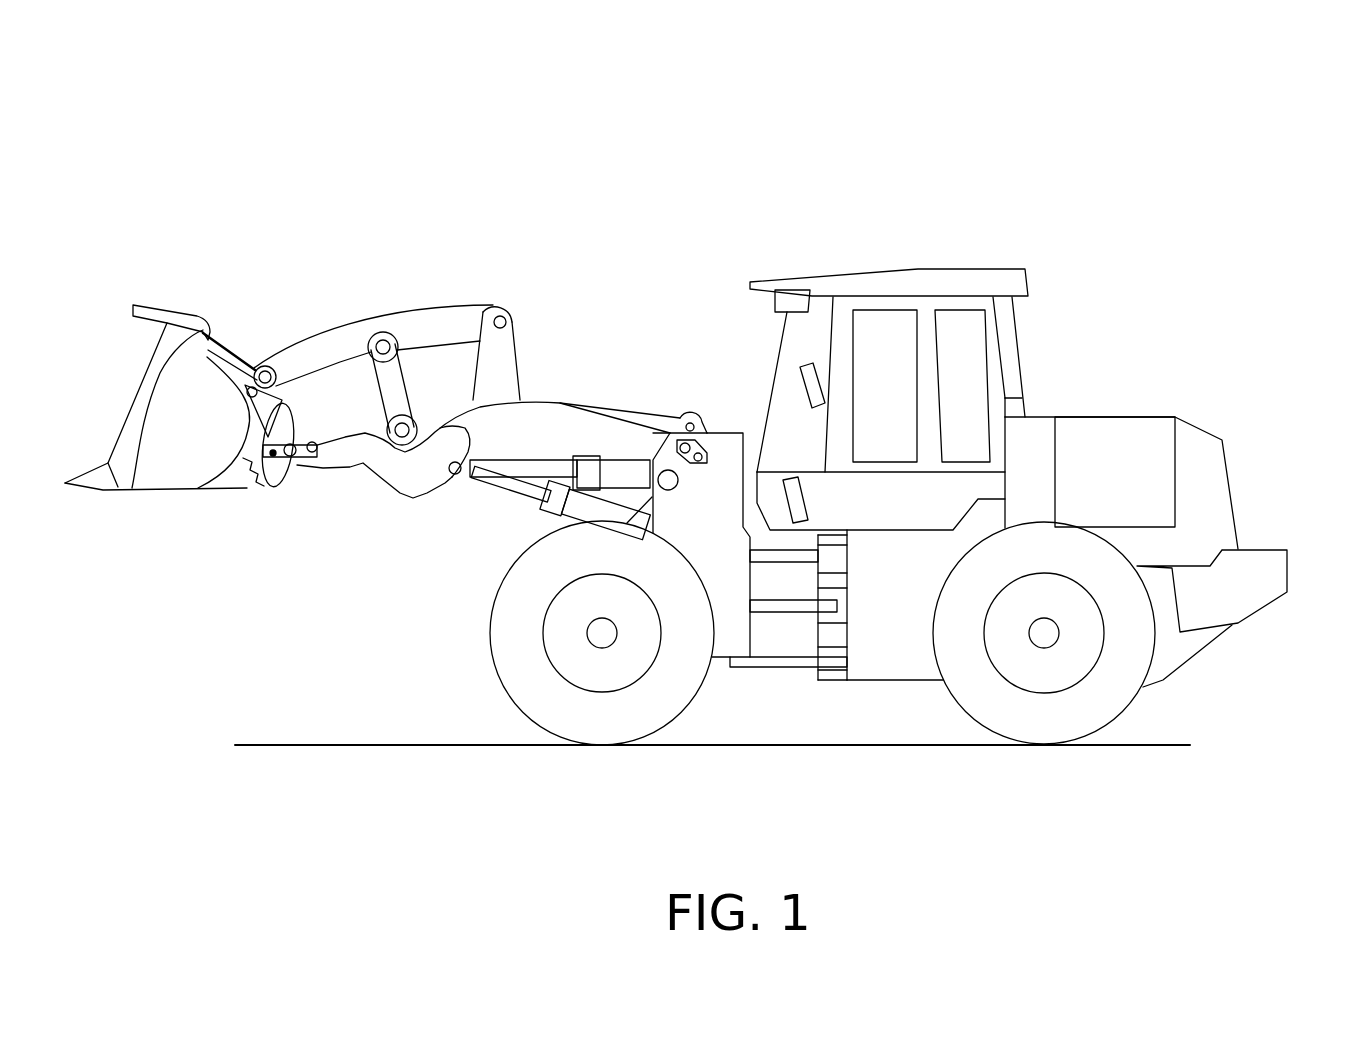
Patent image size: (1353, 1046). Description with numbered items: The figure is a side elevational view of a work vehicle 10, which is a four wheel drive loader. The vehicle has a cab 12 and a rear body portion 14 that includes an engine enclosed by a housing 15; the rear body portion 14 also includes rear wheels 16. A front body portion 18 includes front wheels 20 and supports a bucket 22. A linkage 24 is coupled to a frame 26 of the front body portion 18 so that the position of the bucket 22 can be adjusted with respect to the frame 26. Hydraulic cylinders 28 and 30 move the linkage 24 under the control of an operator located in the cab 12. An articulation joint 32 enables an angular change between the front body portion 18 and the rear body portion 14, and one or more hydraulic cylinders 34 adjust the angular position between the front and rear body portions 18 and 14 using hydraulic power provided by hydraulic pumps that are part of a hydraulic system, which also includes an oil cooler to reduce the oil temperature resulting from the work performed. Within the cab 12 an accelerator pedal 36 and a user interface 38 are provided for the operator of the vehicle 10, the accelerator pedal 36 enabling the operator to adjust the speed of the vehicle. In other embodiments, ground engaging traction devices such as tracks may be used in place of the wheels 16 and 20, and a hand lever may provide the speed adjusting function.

The work vehicle 10 is at (1246, 158).
The cab 12 is at (878, 214).
The rear body portion 14 is at (1166, 369).
The housing 15 is at (1214, 470).
The rear wheels 16 is at (1082, 742).
The front body portion 18 is at (541, 252).
The front wheels 20 is at (505, 665).
The bucket 22 is at (172, 475).
The linkage 24 is at (247, 327).
The frame 26 is at (728, 452).
The hydraulic cylinder 28 is at (617, 470).
The hydraulic cylinder 30 is at (578, 512).
The articulation joint 32 is at (784, 709).
The hydraulic cylinders 34 is at (792, 617).
The accelerator pedal 36 is at (795, 497).
The user interface 38 is at (808, 386).